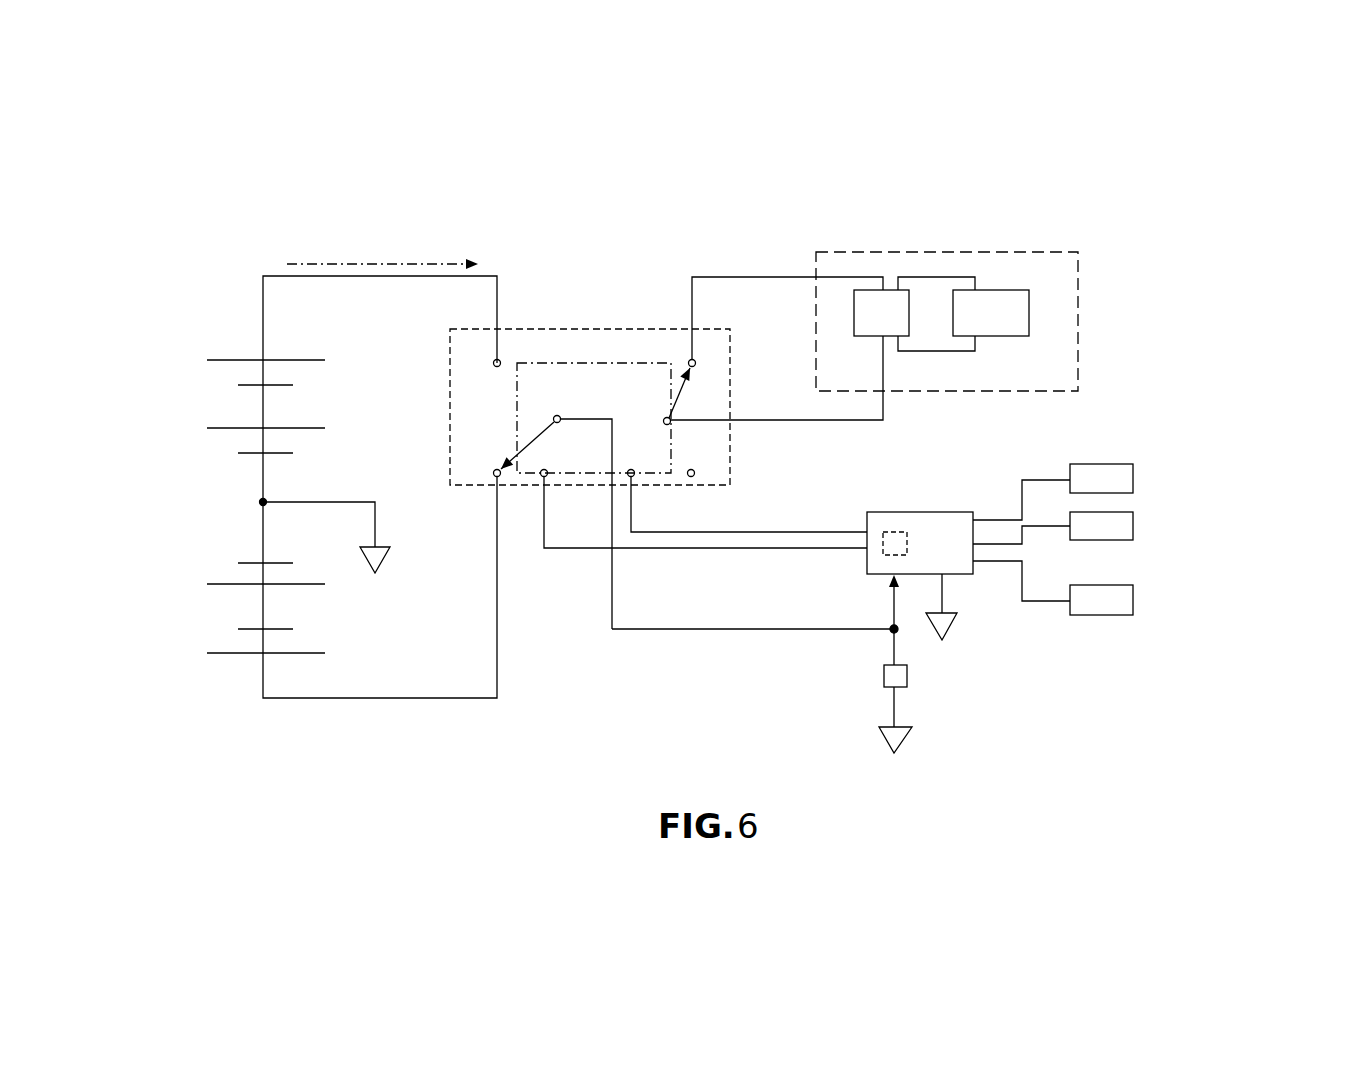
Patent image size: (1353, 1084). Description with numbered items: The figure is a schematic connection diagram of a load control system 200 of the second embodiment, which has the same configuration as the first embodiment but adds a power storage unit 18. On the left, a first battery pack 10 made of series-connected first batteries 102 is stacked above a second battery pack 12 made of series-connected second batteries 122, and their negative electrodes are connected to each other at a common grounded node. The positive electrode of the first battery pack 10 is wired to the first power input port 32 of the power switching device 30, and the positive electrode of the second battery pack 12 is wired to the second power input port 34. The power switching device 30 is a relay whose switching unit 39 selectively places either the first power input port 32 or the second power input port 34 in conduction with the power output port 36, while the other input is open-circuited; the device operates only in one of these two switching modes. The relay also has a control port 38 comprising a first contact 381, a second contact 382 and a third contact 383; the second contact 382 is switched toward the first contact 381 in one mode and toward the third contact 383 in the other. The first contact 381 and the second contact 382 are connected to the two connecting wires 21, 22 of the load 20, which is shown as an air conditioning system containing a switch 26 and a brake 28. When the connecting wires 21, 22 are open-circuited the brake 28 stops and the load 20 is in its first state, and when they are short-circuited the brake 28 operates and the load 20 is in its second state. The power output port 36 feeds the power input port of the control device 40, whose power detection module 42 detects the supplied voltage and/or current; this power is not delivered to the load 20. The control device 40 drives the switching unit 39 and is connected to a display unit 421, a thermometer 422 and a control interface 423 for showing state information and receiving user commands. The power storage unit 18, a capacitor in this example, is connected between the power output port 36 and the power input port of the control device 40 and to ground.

The load control system 200 is at (482, 212).
The first battery pack 10 is at (272, 412).
The first battery 102 is at (238, 373).
The second battery pack 12 is at (272, 627).
The second battery 122 is at (223, 565).
The power switching device 30 is at (589, 315).
The switching unit 39 is at (540, 348).
The first power input port 32 is at (497, 359).
The second power input port 34 is at (497, 476).
The power output port 36 is at (544, 476).
The control port 38 is at (751, 400).
The first contact 381 is at (692, 360).
The second contact 382 is at (669, 420).
The third contact 383 is at (695, 473).
The connecting wire 21 is at (833, 277).
The connecting wire 22 is at (883, 372).
The load 20 is at (953, 284).
The switch 26 is at (866, 302).
The brake 28 is at (993, 302).
The control device 40 is at (885, 541).
The power detection module 42 is at (887, 543).
The display unit 421 is at (1093, 477).
The thermometer 422 is at (1096, 527).
The control interface 423 is at (1102, 604).
The power storage unit 18 is at (888, 675).